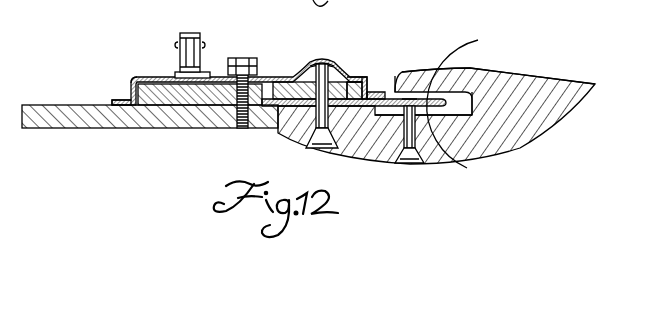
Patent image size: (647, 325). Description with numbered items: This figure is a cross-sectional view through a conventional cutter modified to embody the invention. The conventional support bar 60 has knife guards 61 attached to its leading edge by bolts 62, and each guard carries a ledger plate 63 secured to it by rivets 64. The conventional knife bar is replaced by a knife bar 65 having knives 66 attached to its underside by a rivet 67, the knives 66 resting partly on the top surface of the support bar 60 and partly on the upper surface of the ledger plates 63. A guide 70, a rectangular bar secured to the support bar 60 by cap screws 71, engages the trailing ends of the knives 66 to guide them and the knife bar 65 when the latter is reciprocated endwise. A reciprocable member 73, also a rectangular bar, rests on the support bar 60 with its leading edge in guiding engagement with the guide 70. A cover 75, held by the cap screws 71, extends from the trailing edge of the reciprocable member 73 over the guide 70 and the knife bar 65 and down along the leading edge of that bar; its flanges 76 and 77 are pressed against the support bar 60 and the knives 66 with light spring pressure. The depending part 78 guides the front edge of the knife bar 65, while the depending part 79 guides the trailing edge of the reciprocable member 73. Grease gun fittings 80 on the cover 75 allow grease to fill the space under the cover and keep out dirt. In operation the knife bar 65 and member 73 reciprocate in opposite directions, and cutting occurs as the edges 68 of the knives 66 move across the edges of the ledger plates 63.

The support bar 60 is at (90, 113).
The knife guard 61 is at (527, 58).
The bolt 62 is at (280, 134).
The ledger plate 63 is at (480, 143).
The rivet 64 is at (413, 166).
The knife bar 65 is at (347, 78).
The knife 66 is at (466, 96).
The rivet 67 is at (318, 62).
The edge 68 is at (511, 68).
The guide 70 is at (257, 80).
The cap screw 71 is at (242, 58).
The reciprocable member 73 is at (157, 89).
The cover 75 is at (167, 76).
The flange 76 is at (113, 100).
The flange 77 is at (390, 99).
The depending part 78 is at (372, 90).
The depending part 79 is at (129, 86).
The grease gun fitting 80 is at (190, 34).